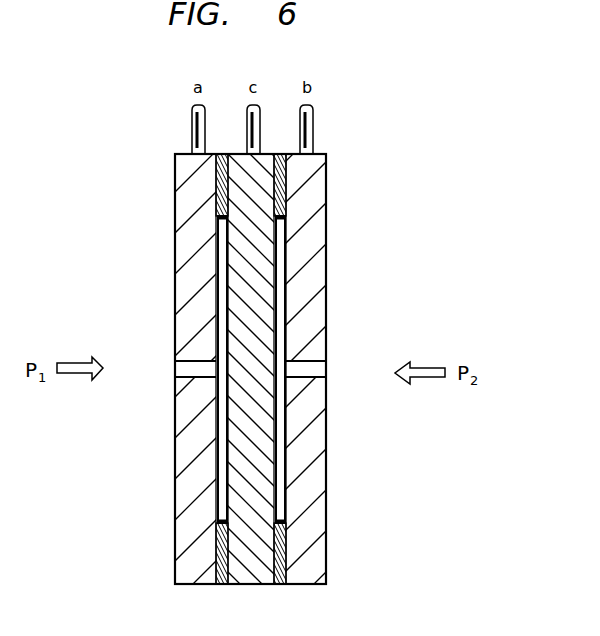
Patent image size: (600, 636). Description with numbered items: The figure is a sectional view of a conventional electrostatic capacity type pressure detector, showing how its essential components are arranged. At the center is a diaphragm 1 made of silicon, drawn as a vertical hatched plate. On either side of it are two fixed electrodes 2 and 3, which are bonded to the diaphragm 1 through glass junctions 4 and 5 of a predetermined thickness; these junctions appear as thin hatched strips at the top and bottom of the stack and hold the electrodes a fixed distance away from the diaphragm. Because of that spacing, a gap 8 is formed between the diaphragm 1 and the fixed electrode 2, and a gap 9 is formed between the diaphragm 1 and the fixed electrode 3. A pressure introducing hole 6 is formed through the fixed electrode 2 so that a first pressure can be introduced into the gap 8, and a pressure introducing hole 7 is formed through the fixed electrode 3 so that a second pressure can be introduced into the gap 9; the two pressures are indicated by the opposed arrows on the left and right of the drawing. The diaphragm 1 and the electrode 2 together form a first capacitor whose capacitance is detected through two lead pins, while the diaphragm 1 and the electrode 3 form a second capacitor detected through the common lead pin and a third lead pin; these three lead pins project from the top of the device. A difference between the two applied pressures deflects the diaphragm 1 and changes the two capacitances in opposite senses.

The diaphragm 1 is at (222, 264).
The fixed electrode 2 is at (177, 453).
The fixed electrode 3 is at (322, 433).
The glass junction 4 is at (218, 588).
The glass junction 5 is at (278, 588).
The pressure introducing hole 6 is at (175, 373).
The pressure introducing hole 7 is at (312, 374).
The gap 8 is at (220, 420).
The gap 9 is at (281, 263).